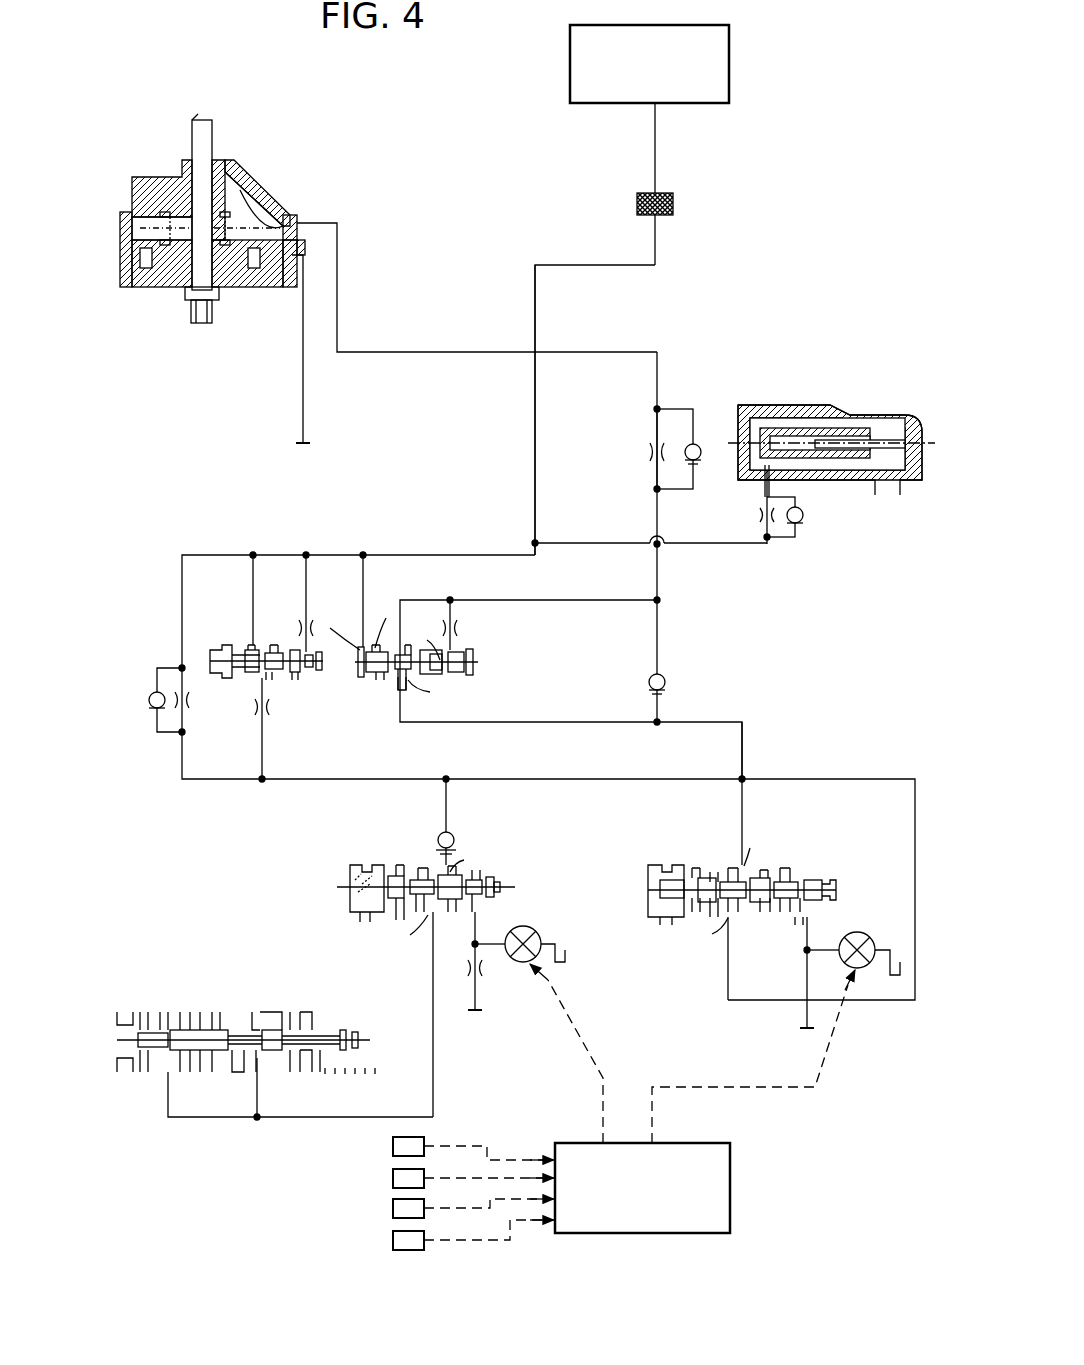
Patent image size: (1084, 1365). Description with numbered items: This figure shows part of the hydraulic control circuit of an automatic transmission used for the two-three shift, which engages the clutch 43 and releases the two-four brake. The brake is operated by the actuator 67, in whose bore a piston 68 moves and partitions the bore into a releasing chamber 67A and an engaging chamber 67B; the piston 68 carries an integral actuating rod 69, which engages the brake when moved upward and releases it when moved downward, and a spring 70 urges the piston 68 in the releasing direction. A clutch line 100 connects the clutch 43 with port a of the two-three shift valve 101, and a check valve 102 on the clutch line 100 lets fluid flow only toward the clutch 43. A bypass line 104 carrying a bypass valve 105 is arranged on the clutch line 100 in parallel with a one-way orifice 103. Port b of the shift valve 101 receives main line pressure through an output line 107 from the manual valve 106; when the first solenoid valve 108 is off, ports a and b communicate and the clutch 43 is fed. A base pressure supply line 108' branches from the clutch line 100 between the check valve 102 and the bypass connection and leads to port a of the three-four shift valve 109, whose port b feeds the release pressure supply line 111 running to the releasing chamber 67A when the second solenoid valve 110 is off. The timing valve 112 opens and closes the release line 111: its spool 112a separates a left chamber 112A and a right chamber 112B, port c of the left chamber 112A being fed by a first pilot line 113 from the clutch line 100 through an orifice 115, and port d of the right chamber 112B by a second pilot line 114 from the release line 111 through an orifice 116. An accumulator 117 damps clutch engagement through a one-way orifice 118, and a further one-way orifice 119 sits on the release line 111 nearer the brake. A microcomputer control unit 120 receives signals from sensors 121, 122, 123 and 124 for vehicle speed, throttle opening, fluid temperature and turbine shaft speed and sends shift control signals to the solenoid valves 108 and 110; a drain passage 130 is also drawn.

The 3-4 clutch 43 is at (730, 70).
The actuator 67 is at (248, 230).
The releasing chamber 67A is at (153, 214).
The engaging chamber 67B is at (152, 290).
The piston 68 is at (245, 290).
The actuating rod 69 is at (213, 138).
The spring 70 is at (240, 228).
The 3-4 clutch line 100 is at (535, 313).
The 2-3 shift valve 101 is at (330, 887).
The check valve 102 is at (438, 838).
The one-way orifice 103 is at (168, 725).
The bypass line 104 is at (262, 745).
The bypass valve 105 is at (232, 684).
The manual valve 106 is at (265, 1010).
The output line 107 is at (434, 1060).
The first solenoid valve 108 is at (532, 946).
The base pressure supply line 108' is at (802, 749).
The 3-4 shift valve 109 is at (826, 863).
The second solenoid valve 110 is at (857, 930).
The release pressure supply line 111 is at (660, 352).
The 2-3 timing valve 112 is at (437, 681).
The left chamber 112A is at (360, 672).
The right chamber 112B is at (476, 660).
The spool 112a is at (400, 692).
The first pilot line 113 is at (365, 578).
The second pilot line 114 is at (575, 602).
The orifice 115 is at (320, 625).
The orifice 116 is at (458, 630).
The 2-3 accumulator 117 is at (845, 403).
The one-way orifice 118 is at (780, 542).
The one-way orifice 119 is at (680, 420).
The control unit 120 is at (730, 1183).
The sensor 121 is at (391, 1146).
The sensor 122 is at (391, 1178).
The sensor 123 is at (391, 1208).
The sensor 124 is at (391, 1240).
The drain passage 130 is at (303, 398).